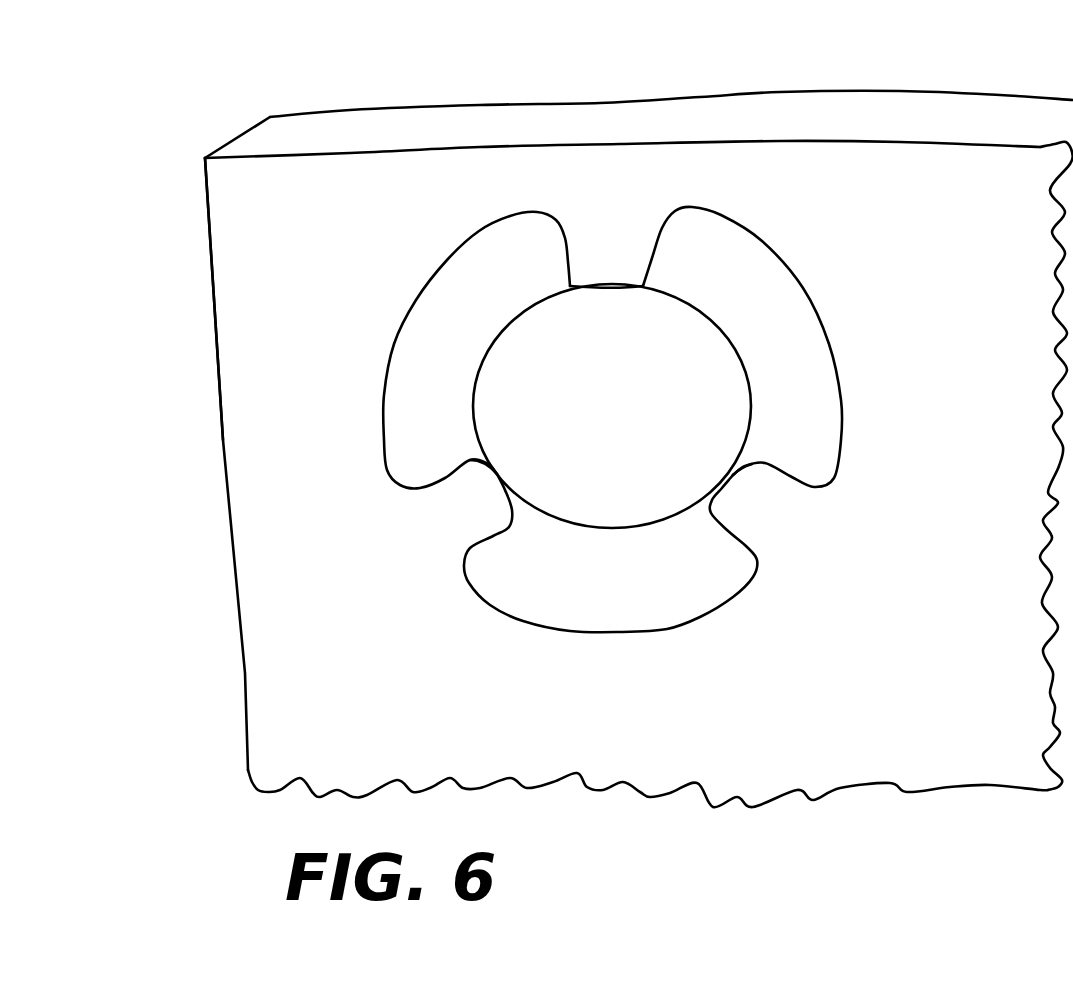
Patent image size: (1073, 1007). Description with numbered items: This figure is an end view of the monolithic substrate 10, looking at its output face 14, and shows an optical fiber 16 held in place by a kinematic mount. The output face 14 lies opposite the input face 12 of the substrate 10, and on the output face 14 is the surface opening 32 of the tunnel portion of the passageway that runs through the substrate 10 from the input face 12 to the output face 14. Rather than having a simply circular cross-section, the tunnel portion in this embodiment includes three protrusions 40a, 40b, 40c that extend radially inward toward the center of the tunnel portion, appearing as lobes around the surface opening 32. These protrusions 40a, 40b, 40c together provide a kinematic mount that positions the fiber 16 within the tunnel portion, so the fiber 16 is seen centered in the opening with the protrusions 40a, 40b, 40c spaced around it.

The substrate 10 is at (313, 280).
The input face 12 is at (344, 110).
The output face 14 is at (226, 215).
The fiber 16 is at (628, 420).
The surface opening 32 is at (405, 408).
The protrusion 40a is at (630, 256).
The protrusion 40b is at (786, 532).
The protrusion 40c is at (470, 537).